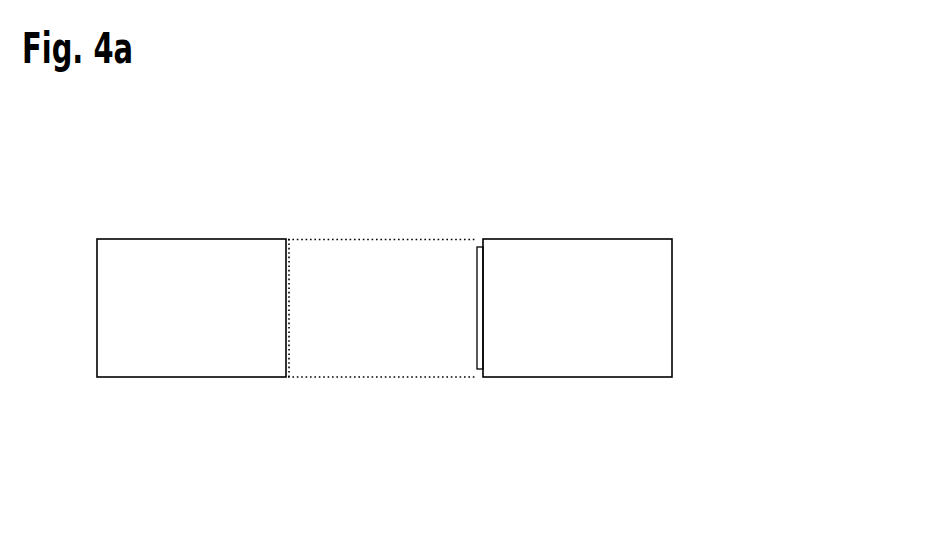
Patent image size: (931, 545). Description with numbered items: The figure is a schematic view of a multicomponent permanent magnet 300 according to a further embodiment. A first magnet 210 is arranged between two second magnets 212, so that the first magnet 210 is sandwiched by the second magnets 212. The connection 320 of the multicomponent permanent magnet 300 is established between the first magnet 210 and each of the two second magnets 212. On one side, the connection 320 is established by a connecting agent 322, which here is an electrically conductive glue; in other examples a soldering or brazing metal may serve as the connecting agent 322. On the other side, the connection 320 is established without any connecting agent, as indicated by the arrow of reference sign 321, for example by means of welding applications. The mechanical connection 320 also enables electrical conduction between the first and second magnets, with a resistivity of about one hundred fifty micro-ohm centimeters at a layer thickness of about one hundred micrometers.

The multicomponent permanent magnet 300 is at (731, 179).
The second magnet 212 is at (192, 377).
The first magnet 210 is at (382, 377).
The connection 320 is at (471, 233).
The connection without connecting agent 321 is at (287, 390).
The connecting agent 322 is at (482, 377).